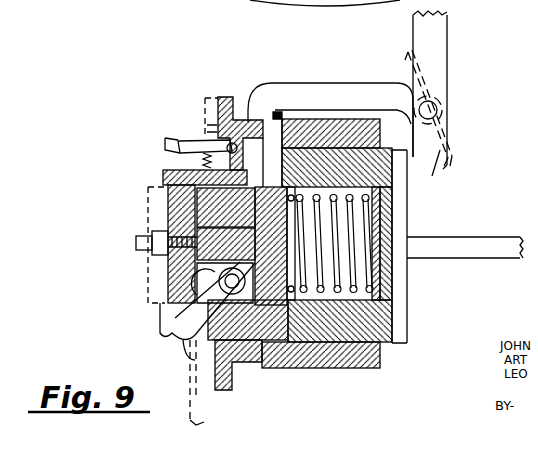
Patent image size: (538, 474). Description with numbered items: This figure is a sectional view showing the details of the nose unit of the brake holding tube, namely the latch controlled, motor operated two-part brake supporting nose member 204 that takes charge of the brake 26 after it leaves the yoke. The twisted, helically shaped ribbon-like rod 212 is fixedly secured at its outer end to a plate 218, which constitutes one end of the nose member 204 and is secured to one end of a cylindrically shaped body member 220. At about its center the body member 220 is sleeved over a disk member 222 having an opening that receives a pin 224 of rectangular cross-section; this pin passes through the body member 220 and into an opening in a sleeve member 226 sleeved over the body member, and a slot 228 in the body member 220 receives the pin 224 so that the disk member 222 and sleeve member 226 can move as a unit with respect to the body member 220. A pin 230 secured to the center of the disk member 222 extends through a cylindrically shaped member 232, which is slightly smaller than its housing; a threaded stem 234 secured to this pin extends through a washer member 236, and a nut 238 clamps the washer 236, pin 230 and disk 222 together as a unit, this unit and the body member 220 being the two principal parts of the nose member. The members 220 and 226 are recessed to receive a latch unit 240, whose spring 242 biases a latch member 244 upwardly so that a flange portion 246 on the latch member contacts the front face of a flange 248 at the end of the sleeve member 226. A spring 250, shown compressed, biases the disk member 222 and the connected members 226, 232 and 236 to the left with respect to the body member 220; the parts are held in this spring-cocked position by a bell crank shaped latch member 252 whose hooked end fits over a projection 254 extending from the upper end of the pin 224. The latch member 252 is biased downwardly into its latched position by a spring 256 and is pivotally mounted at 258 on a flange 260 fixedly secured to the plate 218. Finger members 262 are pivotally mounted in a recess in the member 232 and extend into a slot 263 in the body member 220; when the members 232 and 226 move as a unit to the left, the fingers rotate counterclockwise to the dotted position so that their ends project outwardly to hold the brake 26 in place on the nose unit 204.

The brake 26 is at (197, 410).
The brake supporting nose member 204 is at (355, 82).
The rod 212 is at (513, 254).
The plate 218 is at (400, 223).
The body member 220 is at (408, 160).
The disk member 222 is at (283, 350).
The pin 224 is at (291, 140).
The sleeve member 226 is at (357, 133).
The slot 228 is at (250, 132).
The pin 230 is at (205, 272).
The cylindrically shaped member 232 is at (197, 200).
The threaded stem 234 is at (195, 257).
The washer member 236 is at (190, 216).
The nut 238 is at (137, 248).
The latch unit 240 is at (183, 143).
The spring 242 is at (198, 157).
The latch member 244 is at (178, 141).
The flange portion 246 is at (213, 134).
The flange 248 is at (224, 100).
The spring 250 is at (355, 270).
The latch member 252 is at (332, 93).
The projection 254 is at (274, 110).
The spring 256 is at (437, 80).
The pivot 258 is at (437, 109).
The flange 260 is at (430, 175).
The finger members 262 is at (190, 321).
The slot 263 is at (184, 363).